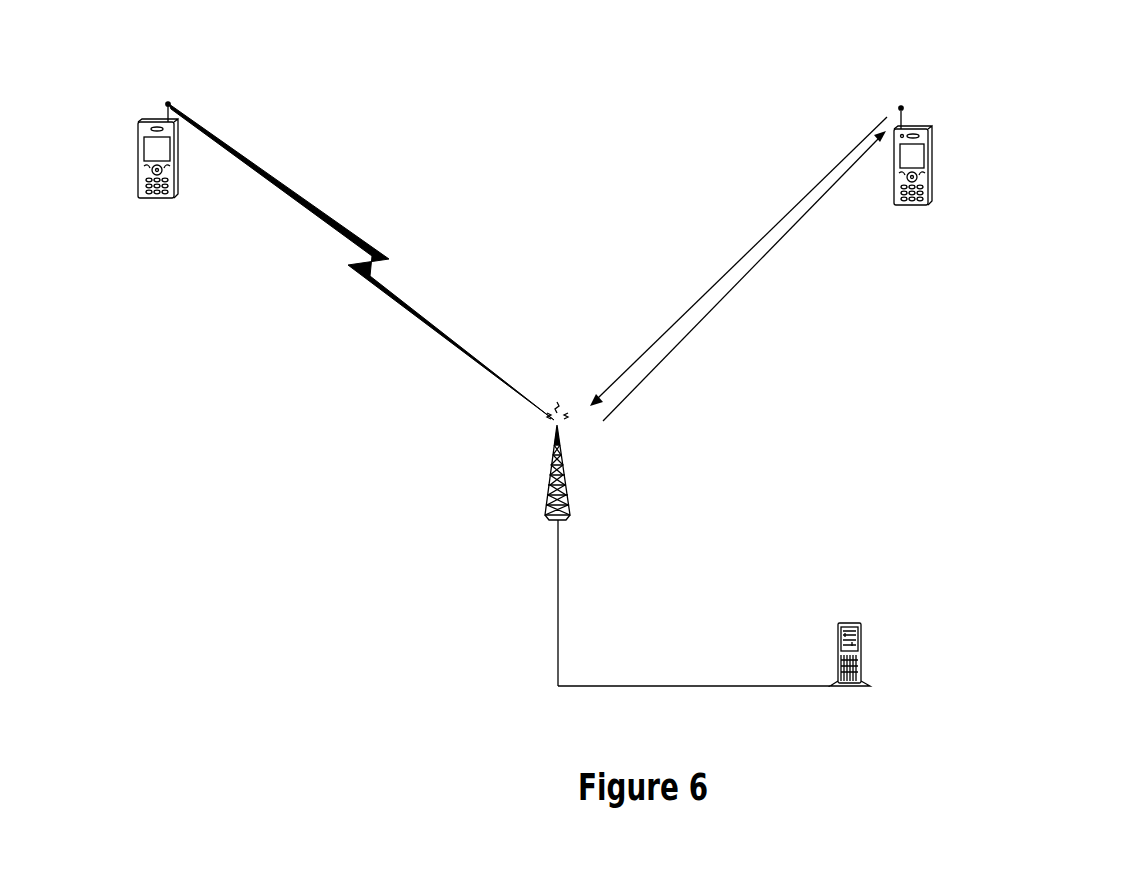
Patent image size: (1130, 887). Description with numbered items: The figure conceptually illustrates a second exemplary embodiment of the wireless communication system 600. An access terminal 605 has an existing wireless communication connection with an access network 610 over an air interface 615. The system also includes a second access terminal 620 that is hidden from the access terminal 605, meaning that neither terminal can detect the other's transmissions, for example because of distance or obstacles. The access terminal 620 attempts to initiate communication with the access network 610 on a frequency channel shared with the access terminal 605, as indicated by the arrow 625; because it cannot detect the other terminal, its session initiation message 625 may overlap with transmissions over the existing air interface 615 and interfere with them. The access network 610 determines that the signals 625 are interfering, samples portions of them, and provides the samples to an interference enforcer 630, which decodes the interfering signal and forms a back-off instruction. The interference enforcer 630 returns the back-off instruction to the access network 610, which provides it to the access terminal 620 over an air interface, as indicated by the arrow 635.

The wireless communication system 600 is at (1024, 91).
The access terminal 605 is at (163, 200).
The access network 610 is at (546, 513).
The air interface 615 is at (373, 250).
The access terminal 620 is at (915, 206).
The session initiation message 625 is at (770, 232).
The interference enforcer 630 is at (862, 655).
The back-off instruction transmission 635 is at (727, 297).